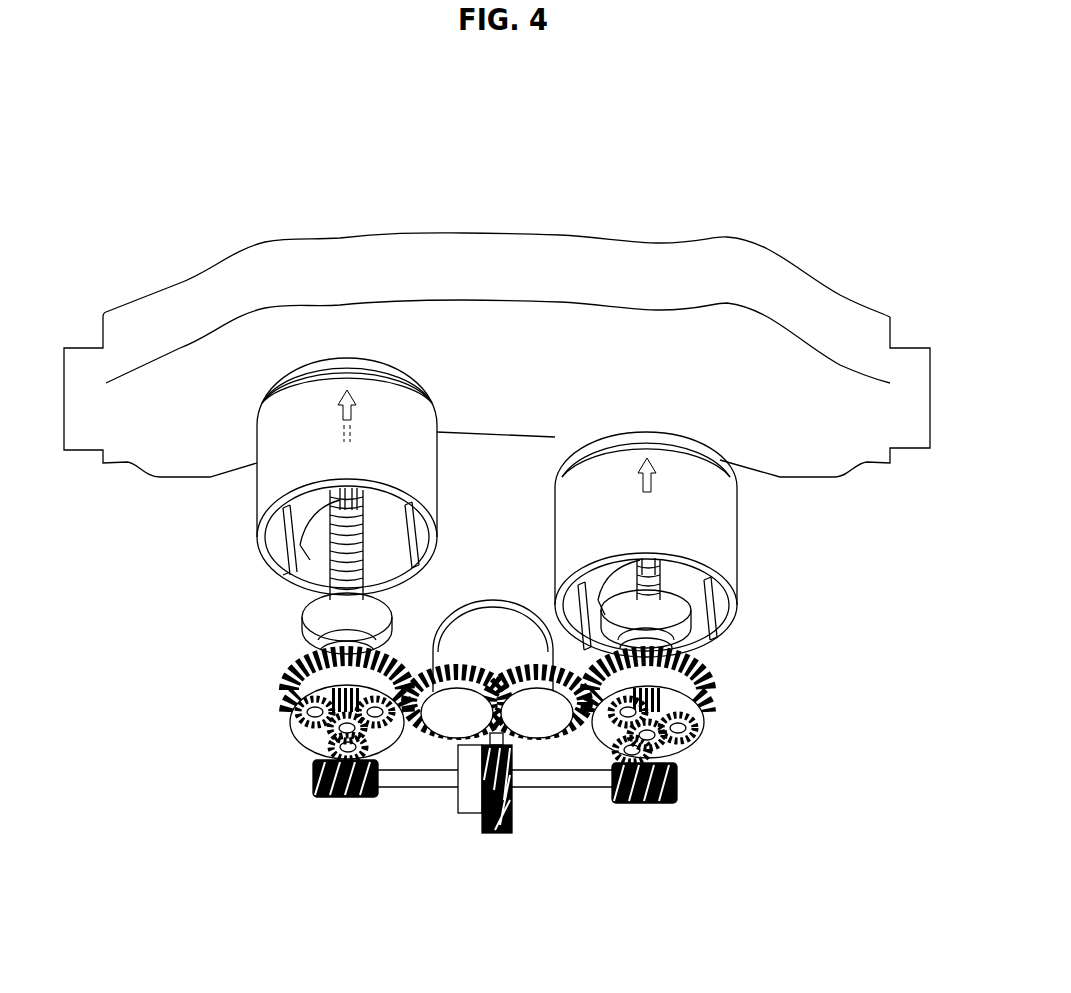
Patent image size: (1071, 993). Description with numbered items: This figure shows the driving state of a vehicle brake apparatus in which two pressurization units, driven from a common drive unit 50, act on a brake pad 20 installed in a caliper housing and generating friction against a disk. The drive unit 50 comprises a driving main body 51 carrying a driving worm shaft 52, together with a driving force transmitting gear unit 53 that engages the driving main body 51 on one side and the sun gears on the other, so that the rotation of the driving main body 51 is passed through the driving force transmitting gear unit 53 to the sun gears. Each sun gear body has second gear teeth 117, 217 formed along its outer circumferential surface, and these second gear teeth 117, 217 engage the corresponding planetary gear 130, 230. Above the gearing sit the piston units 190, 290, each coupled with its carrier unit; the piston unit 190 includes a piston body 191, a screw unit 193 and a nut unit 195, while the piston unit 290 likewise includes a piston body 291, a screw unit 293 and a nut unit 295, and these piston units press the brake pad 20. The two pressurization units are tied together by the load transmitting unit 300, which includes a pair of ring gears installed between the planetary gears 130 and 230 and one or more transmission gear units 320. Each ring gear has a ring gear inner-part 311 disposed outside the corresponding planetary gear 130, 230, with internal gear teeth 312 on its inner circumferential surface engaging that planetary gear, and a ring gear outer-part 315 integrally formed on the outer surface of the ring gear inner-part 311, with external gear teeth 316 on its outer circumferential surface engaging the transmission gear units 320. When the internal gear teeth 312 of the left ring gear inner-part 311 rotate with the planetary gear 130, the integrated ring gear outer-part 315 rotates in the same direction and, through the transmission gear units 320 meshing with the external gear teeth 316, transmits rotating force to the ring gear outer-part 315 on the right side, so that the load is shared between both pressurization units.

The brake pad 20 is at (733, 343).
The load transmitting unit 300 is at (500, 580).
The piston unit 190 is at (251, 510).
The piston body 191 is at (278, 473).
The nut unit 195 is at (320, 560).
The screw unit 193 is at (325, 598).
The piston unit 290 is at (748, 547).
The piston body 291 is at (705, 520).
The screw unit 293 is at (660, 583).
The nut unit 295 is at (630, 612).
The ring gear outer-part 315 is at (241, 731).
The external gear teeth 316 is at (241, 731).
The planetary gear 130 is at (300, 717).
The planetary gear 230 is at (690, 738).
The ring gear inner-part 311 is at (251, 761).
The internal gear teeth 312 is at (251, 761).
The second gear teeth 117 is at (310, 757).
The second gear teeth 217 is at (675, 755).
The transmission gear unit 320 is at (357, 797).
The drive unit 50 is at (512, 804).
The driving main body 51 is at (524, 769).
The driving worm shaft 52 is at (503, 835).
The driving force transmitting gear unit 53 is at (375, 795).